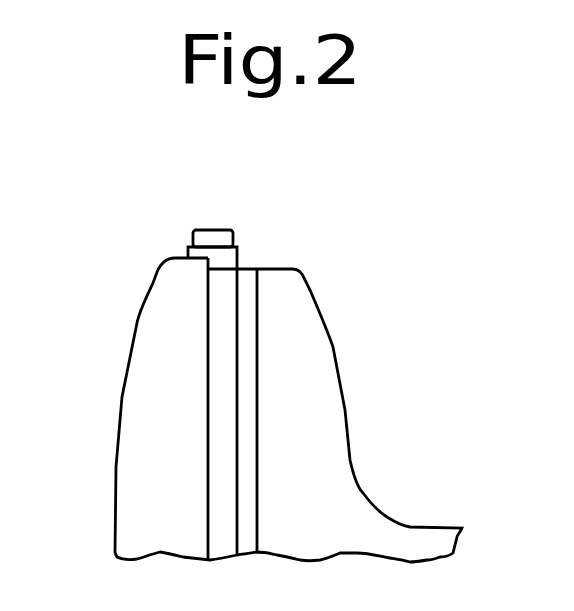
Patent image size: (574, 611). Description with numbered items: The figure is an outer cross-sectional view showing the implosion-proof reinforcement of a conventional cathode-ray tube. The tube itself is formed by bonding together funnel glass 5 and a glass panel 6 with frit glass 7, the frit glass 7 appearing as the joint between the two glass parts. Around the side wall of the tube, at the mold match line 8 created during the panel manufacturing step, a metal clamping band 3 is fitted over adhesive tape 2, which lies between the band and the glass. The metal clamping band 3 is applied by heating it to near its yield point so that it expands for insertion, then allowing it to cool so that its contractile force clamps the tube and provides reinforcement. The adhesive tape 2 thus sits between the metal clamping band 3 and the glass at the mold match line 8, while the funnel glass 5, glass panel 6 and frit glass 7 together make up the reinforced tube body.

The adhesive tape 2 is at (228, 259).
The metal clamping band 3 is at (212, 238).
The funnel glass 5 is at (308, 396).
The glass panel 6 is at (163, 375).
The frit glass 7 is at (247, 347).
The mold match line 8 is at (207, 320).